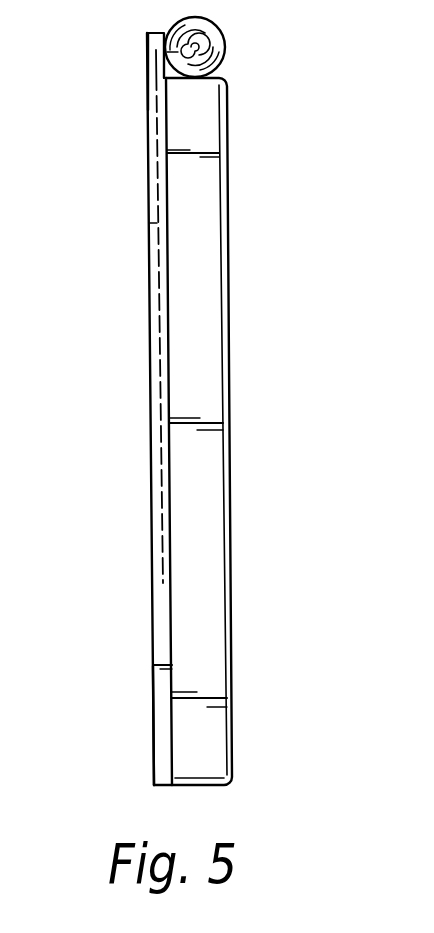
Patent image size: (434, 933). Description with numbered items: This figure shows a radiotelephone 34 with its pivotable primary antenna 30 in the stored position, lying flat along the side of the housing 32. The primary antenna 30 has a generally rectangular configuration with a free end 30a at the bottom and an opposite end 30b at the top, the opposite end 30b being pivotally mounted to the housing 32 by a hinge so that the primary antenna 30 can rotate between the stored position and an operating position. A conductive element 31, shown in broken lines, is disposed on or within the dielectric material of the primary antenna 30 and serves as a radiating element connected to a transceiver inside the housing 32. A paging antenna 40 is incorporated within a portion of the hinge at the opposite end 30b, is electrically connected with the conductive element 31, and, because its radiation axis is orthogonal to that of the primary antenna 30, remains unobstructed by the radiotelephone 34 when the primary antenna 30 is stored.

The primary antenna 30 is at (148, 307).
The free end 30a is at (154, 757).
The opposite end 30b is at (147, 76).
The conductive element 31 is at (160, 480).
The housing 32 is at (232, 728).
The radiotelephone 34 is at (274, 572).
The paging antenna 40 is at (226, 58).